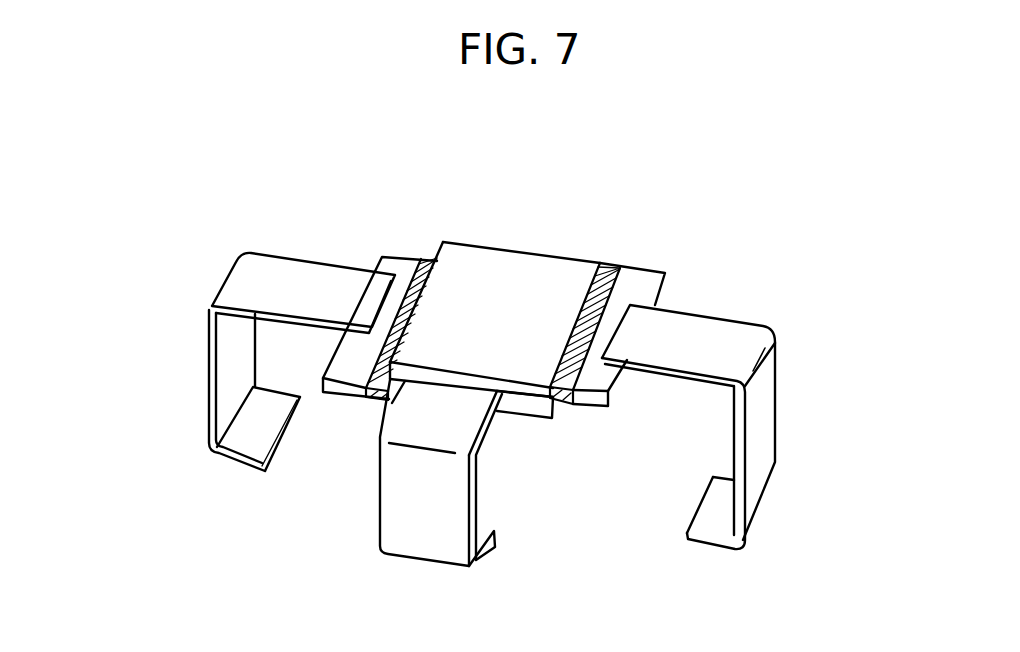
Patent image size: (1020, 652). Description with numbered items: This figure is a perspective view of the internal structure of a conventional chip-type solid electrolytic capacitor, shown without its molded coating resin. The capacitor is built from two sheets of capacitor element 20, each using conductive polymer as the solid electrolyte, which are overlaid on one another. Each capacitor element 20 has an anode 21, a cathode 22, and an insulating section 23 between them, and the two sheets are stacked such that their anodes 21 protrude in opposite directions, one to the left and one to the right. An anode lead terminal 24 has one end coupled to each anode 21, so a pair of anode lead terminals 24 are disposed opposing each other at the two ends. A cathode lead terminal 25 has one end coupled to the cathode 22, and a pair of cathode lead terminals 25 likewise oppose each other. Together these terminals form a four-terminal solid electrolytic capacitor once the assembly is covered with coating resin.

The capacitor element 20 is at (713, 157).
The anode 21 is at (398, 262).
The cathode 22 is at (457, 250).
The insulating section 23 is at (617, 268).
The anode lead terminal 24 is at (208, 402).
The cathode lead terminal 25 is at (423, 550).